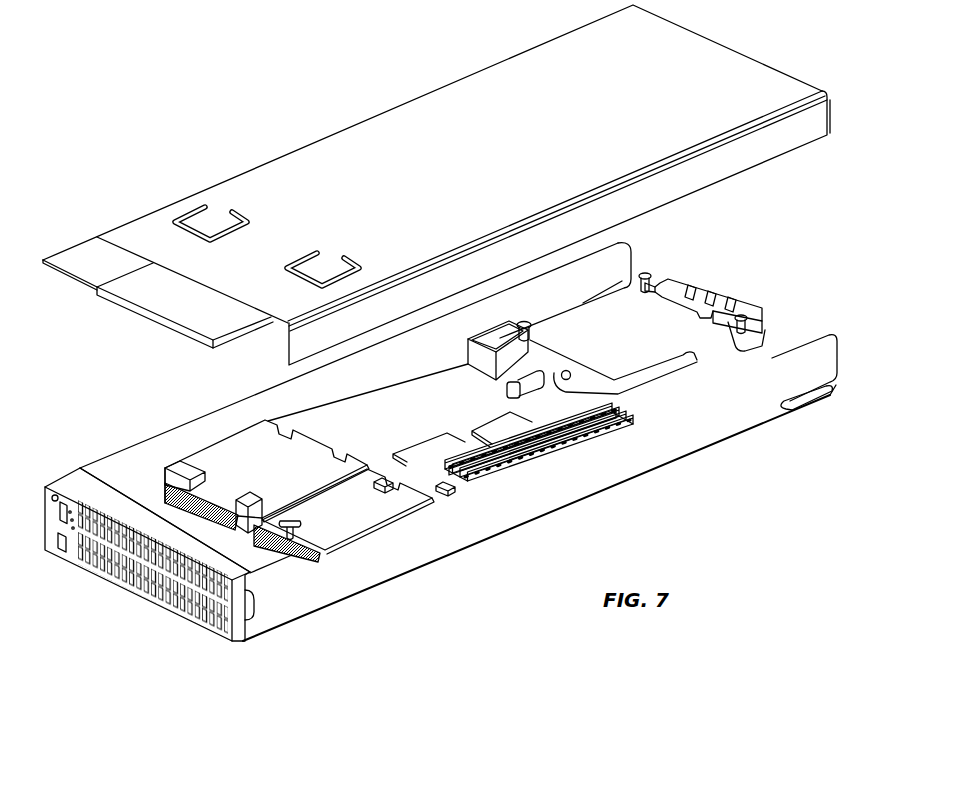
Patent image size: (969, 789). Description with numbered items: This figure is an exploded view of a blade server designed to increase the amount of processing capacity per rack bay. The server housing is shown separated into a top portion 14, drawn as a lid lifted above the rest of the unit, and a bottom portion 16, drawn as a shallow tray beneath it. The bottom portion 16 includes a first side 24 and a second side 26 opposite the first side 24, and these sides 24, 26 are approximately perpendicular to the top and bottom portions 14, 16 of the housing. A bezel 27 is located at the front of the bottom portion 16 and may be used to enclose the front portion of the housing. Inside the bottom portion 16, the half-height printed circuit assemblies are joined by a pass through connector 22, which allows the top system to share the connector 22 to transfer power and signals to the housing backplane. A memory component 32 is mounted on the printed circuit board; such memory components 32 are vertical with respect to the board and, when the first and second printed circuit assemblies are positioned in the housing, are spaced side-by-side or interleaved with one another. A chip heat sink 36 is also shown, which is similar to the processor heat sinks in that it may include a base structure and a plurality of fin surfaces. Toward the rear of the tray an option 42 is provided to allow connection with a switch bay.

The top portion 14 is at (703, 57).
The bottom portion 16 is at (684, 455).
The pass through connector 22 is at (485, 364).
The first side 24 is at (375, 394).
The second side 26 is at (614, 472).
The bezel 27 is at (69, 555).
The memory component 32 is at (503, 469).
The chip heat sink 36 is at (275, 478).
The option 42 is at (678, 354).